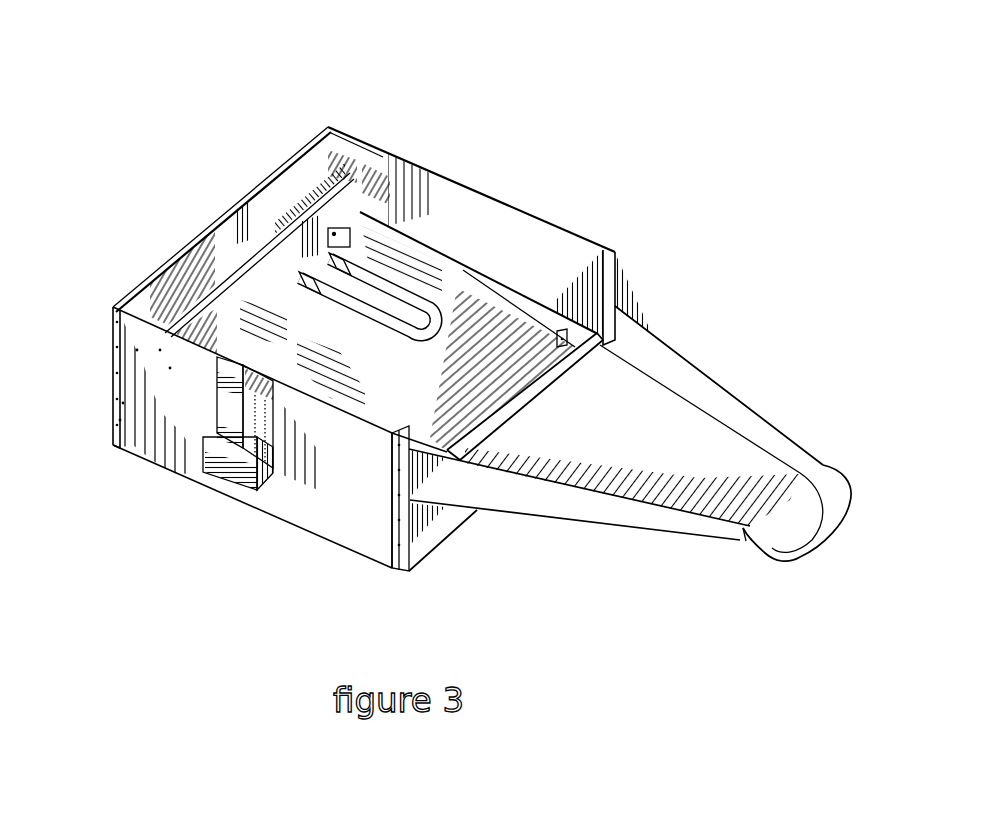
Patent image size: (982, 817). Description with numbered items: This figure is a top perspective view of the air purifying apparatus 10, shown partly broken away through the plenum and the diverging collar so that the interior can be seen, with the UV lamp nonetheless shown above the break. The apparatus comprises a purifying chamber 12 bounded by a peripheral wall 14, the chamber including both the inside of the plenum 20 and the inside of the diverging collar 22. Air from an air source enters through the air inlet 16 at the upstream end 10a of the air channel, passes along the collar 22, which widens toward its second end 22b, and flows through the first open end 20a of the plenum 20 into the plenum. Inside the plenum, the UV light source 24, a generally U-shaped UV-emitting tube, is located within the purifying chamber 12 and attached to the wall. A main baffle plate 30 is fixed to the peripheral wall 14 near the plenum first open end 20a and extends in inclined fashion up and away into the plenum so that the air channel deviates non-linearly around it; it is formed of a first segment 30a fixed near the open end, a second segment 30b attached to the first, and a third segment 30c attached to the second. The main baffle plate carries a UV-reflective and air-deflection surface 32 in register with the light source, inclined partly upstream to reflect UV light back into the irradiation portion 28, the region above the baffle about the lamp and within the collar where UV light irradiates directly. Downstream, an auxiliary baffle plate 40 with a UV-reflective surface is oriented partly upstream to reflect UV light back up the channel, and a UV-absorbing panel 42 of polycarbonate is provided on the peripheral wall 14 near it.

The air purifying apparatus 10 is at (241, 115).
The upstream end 10a is at (822, 537).
The purifying chamber 12 is at (448, 220).
The peripheral wall 14 is at (310, 510).
The air inlet 16 is at (795, 545).
The plenum 20 is at (117, 389).
The first open end 20a is at (603, 312).
The diverging collar 22 is at (603, 508).
The second end 22b is at (580, 375).
The UV light source 24 is at (390, 283).
The irradiation portion 28 is at (425, 214).
The main baffle plate 30 is at (472, 318).
The first segment 30a is at (440, 287).
The second segment 30b is at (347, 222).
The third segment 30c is at (318, 157).
The UV-reflective and air-deflection surface 32 is at (432, 381).
The auxiliary baffle plate 40 is at (257, 243).
The UV-absorbing panel 42 is at (165, 284).